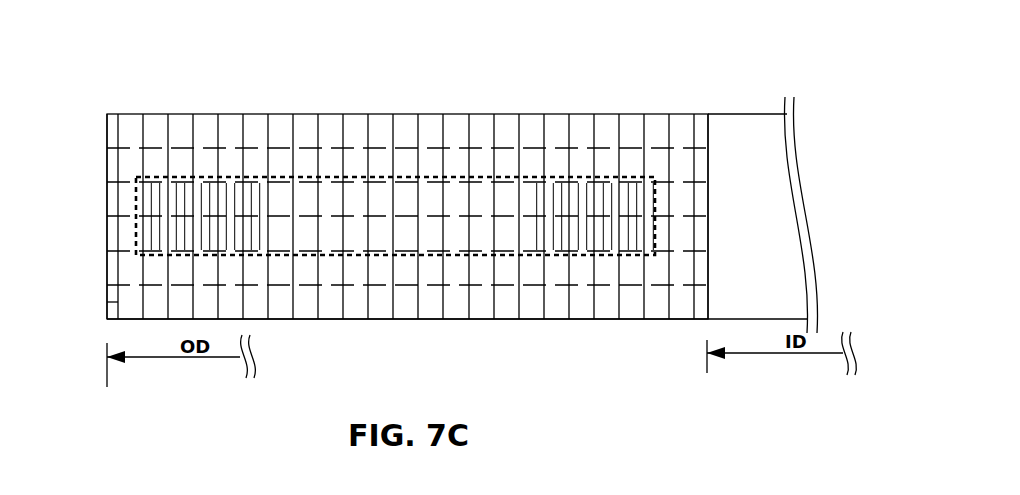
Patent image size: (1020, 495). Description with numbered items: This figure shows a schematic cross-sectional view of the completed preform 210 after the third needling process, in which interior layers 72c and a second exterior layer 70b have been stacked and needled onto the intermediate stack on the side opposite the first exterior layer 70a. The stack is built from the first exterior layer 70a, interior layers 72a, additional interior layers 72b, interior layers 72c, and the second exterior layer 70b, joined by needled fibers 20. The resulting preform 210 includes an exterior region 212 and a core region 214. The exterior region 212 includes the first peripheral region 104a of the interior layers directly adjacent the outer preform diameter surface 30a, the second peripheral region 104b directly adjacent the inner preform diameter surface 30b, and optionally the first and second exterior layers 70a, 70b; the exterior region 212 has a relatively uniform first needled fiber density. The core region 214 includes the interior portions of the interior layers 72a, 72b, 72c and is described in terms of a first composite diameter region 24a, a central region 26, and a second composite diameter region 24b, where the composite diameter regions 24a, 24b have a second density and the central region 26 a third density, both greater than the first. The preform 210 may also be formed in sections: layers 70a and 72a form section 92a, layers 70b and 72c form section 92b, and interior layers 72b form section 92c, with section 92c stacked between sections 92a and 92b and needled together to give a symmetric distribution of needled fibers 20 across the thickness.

The preform 210 is at (129, 50).
The needled fibers 20 is at (568, 305).
The exterior region 212 is at (380, 322).
The core region 214 is at (464, 262).
The first composite diameter region 24a is at (262, 108).
The second composite diameter region 24b is at (657, 108).
The central region 26 is at (545, 108).
The first peripheral region 104a is at (143, 108).
The second peripheral region 104b is at (705, 108).
The outer preform diameter surface 30a is at (107, 124).
The inner preform diameter surface 30b is at (708, 117).
The first exterior layer 70a is at (107, 303).
The second exterior layer 70b is at (107, 138).
The interior layers 72a is at (107, 273).
The additional interior layers 72b is at (107, 185).
The interior layers 72c is at (107, 170).
The section 92a is at (708, 250).
The section 92b is at (708, 114).
The section 92c is at (708, 182).